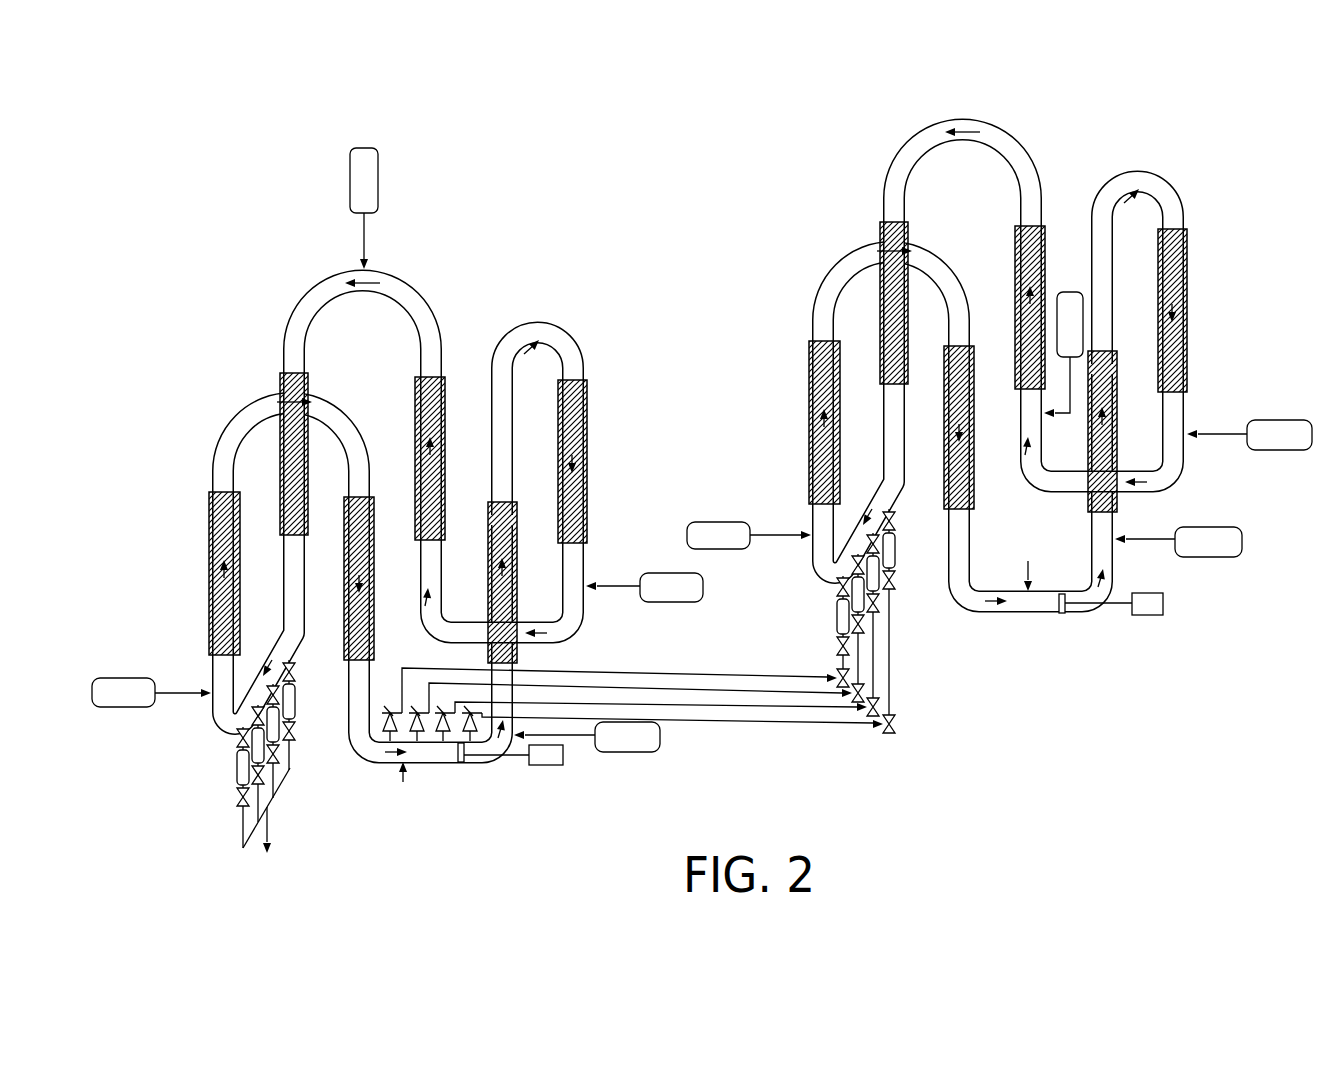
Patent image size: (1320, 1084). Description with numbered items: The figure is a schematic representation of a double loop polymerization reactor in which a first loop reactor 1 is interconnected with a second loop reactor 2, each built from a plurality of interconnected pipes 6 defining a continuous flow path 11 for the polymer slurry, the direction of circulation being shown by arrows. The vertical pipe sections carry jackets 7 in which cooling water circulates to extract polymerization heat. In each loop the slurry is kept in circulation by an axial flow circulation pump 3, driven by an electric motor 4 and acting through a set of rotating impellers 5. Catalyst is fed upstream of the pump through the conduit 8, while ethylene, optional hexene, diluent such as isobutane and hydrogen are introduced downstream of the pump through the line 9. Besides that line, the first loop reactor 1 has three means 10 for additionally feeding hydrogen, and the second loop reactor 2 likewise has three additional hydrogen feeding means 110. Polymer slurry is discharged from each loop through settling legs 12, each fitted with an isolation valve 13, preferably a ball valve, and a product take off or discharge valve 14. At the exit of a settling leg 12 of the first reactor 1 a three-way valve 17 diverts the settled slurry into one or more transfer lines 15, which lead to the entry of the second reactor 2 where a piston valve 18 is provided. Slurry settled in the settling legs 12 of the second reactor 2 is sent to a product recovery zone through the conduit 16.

The first loop reactor 1 is at (1245, 186).
The second loop reactor 2 is at (634, 336).
The circulation pump 3 is at (484, 766).
The electric motor 4 is at (547, 766).
The rotating impellers 5 is at (459, 766).
The interconnected pipes 6 is at (306, 294).
The jackets 7 is at (590, 478).
The conduit 8 is at (717, 677).
The line 9 is at (583, 737).
The means for additionally feeding hydrogen 10 is at (1069, 414).
The continuous flow path 11 is at (526, 352).
The settling legs 12 is at (236, 764).
The isolation valve 13 is at (294, 666).
The discharge valve 14 is at (294, 735).
The transfer line 15 is at (724, 675).
The conduit 16 is at (266, 821).
The three-way valve 17 is at (895, 728).
The piston valve 18 is at (390, 706).
The additional hydrogen feeding means 110 is at (367, 241).